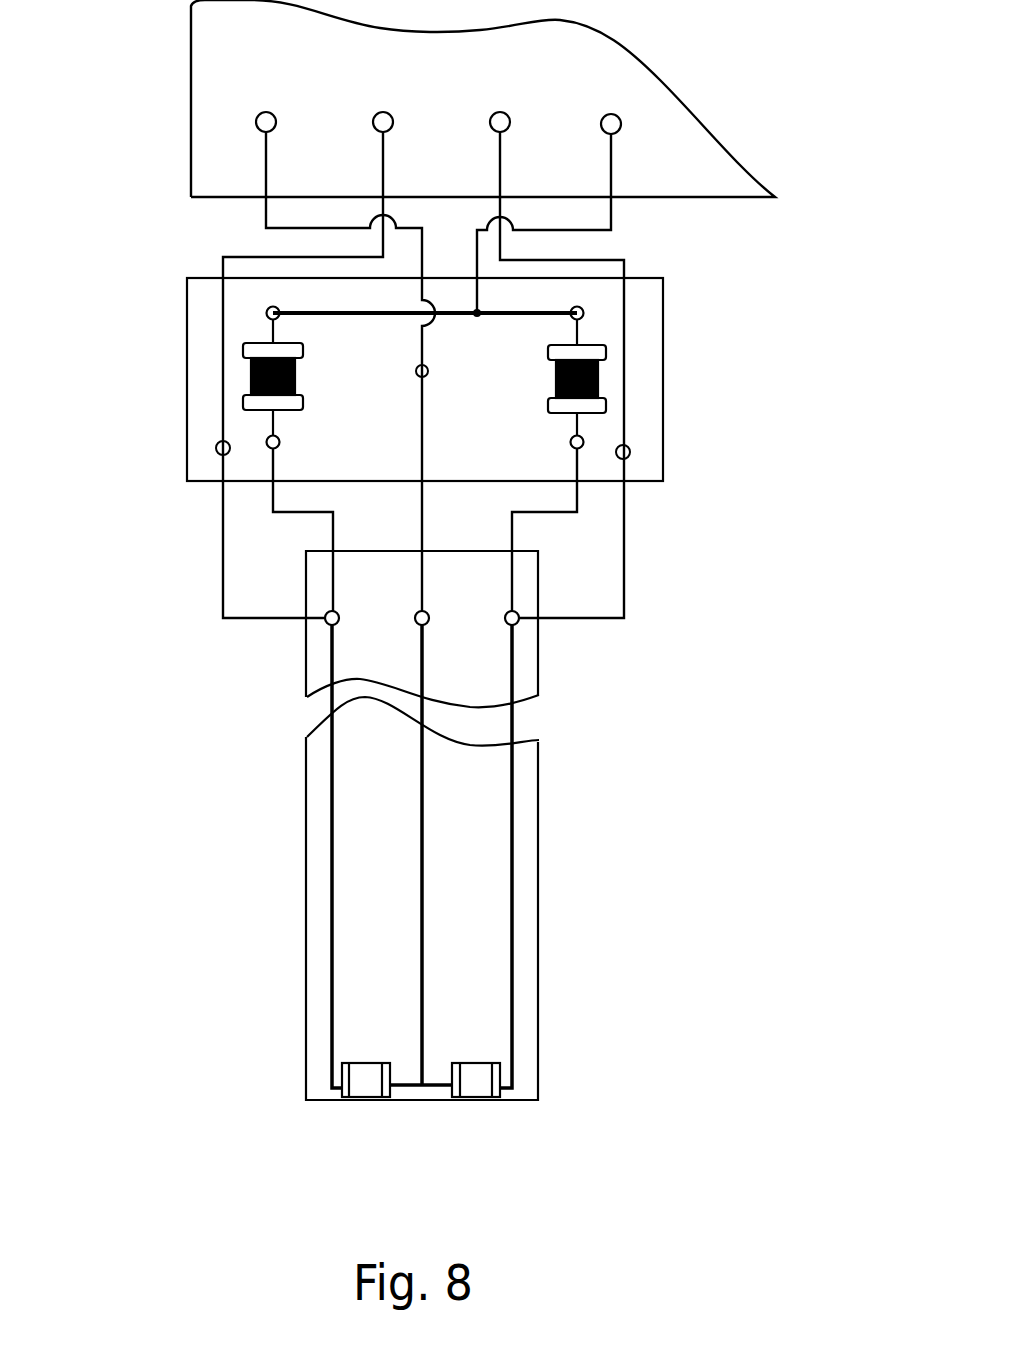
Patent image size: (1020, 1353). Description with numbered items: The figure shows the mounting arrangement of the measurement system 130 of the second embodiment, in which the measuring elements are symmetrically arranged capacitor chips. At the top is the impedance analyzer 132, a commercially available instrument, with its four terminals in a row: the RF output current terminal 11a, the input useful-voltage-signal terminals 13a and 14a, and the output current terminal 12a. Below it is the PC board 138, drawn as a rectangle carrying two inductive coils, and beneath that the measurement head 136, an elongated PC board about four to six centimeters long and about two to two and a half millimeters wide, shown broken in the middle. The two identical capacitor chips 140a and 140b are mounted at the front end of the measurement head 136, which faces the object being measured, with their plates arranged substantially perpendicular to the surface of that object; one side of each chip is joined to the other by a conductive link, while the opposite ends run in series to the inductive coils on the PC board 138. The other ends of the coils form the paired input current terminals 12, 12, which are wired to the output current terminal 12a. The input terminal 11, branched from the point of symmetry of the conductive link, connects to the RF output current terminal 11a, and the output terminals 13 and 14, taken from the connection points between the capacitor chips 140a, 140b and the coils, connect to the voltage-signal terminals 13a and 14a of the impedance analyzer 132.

The impedance analyzer 132 is at (712, 128).
The RF output current terminal 11a is at (273, 104).
The input useful-voltage-signal terminal 13a is at (389, 104).
The input useful-voltage-signal terminal 14a is at (506, 104).
The output current terminal 12a is at (618, 105).
The measurement system 130 is at (195, 732).
The input current terminal 12 is at (265, 313).
The input terminal 11 is at (453, 376).
The output terminal 13 is at (215, 452).
The output terminal 14 is at (628, 458).
The PC board 138 is at (663, 365).
The measurement head 136 is at (548, 872).
The capacitor chip 140a is at (340, 1080).
The capacitor chip 140b is at (505, 1078).